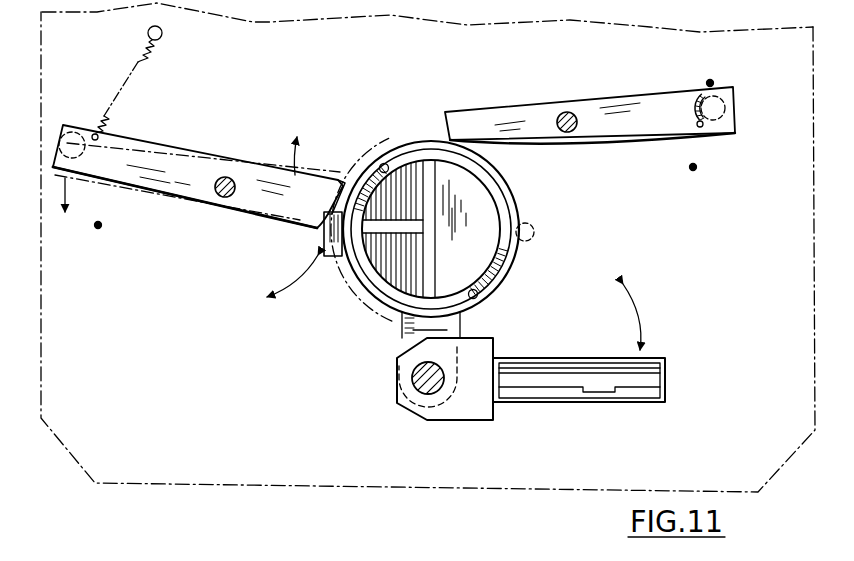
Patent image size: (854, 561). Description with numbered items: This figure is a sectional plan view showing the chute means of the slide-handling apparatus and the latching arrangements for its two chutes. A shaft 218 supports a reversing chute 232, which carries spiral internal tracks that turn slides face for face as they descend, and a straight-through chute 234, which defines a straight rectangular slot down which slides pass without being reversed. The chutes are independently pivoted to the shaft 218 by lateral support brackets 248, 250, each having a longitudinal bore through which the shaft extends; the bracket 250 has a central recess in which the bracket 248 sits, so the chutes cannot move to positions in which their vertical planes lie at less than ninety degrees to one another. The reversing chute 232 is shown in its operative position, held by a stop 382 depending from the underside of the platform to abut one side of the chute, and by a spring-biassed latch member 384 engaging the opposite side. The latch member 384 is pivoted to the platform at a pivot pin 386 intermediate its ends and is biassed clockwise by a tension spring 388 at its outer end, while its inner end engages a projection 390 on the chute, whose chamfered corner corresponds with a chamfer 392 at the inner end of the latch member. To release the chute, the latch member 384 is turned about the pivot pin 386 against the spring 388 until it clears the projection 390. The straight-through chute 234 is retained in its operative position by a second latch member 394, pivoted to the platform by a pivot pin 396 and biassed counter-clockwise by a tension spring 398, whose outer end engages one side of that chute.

The shaft 218 is at (412, 385).
The reversing chute 232 is at (516, 189).
The straight-through chute 234 is at (578, 406).
The lateral support bracket 248 is at (452, 329).
The lateral support bracket 250 is at (470, 407).
The stop 382 is at (535, 232).
The latch member 384 is at (170, 157).
The pivot pin 386 is at (222, 198).
The tension spring 388 is at (153, 46).
The projection 390 is at (324, 238).
The chamfer 392 is at (345, 177).
The second latch member 394 is at (622, 97).
The pivot pin 396 is at (567, 112).
The tension spring 398 is at (687, 93).